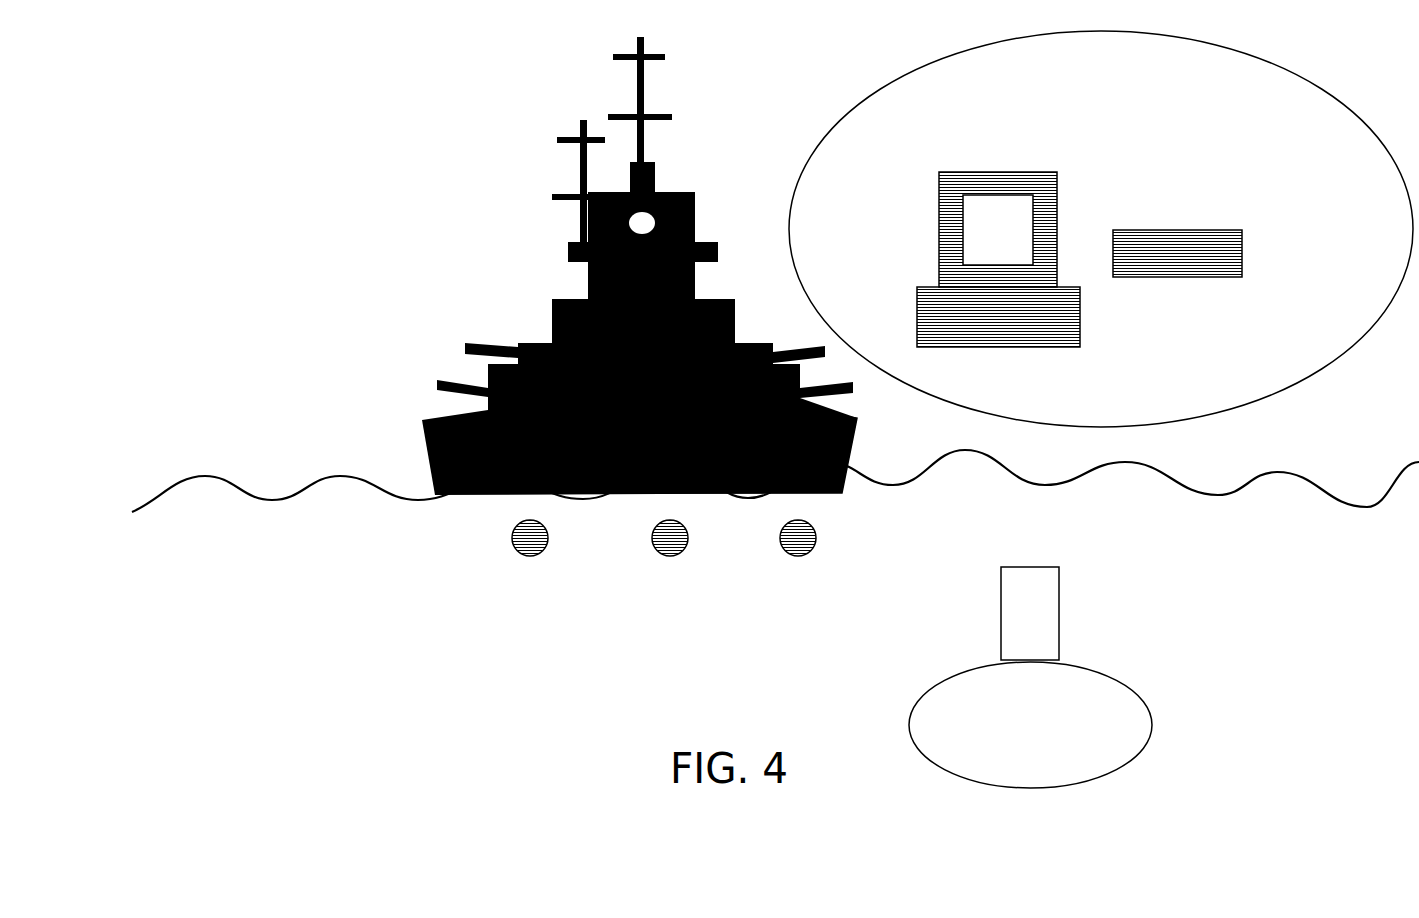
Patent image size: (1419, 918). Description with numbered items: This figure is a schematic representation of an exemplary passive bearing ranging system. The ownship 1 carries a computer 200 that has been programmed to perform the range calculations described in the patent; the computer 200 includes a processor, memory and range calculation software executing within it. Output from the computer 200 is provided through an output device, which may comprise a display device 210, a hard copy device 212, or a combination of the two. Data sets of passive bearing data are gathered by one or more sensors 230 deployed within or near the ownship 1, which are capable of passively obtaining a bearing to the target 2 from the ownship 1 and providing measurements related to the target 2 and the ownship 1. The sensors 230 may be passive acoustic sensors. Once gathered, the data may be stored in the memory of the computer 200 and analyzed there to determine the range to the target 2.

The ownship 1 is at (438, 344).
The target 2 is at (1124, 652).
The computer 200 is at (896, 216).
The display device 210 is at (1022, 230).
The hard copy device 212 is at (1230, 263).
The sensors 230 is at (780, 555).